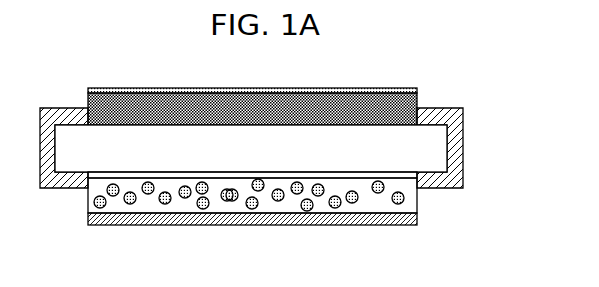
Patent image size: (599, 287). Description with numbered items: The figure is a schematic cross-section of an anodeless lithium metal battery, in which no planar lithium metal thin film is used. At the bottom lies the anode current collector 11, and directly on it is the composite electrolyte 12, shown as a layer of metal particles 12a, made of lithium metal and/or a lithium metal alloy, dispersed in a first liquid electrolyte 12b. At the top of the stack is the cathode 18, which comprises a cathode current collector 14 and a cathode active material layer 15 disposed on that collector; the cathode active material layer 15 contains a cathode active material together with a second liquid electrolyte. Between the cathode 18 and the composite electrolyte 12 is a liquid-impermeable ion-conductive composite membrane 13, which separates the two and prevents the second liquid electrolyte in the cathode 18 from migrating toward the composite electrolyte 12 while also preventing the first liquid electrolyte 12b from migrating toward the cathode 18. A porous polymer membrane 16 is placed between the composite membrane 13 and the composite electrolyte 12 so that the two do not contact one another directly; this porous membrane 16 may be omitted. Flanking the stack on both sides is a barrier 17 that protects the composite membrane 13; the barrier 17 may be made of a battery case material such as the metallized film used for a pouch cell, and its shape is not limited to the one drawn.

The anode current collector 11 is at (418, 219).
The composite electrolyte 12 is at (305, 224).
The metal particle 12a is at (308, 211).
The first liquid electrolyte 12b is at (367, 204).
The liquid-impermeable ion-conductive composite membrane 13 is at (438, 152).
The cathode current collector 14 is at (418, 92).
The cathode active material layer 15 is at (418, 104).
The porous polymer membrane 16 is at (451, 175).
The barrier 17 is at (456, 133).
The cathode 18 is at (327, 96).